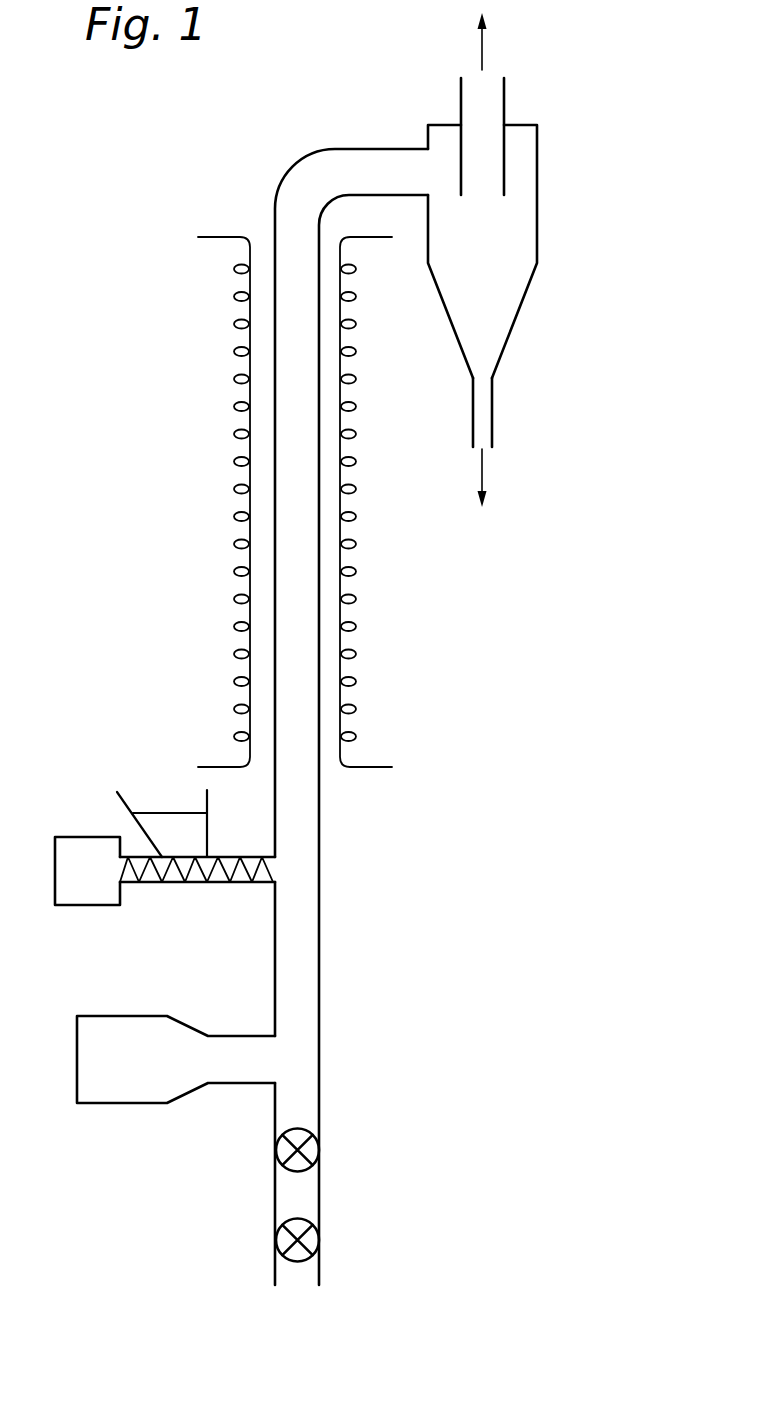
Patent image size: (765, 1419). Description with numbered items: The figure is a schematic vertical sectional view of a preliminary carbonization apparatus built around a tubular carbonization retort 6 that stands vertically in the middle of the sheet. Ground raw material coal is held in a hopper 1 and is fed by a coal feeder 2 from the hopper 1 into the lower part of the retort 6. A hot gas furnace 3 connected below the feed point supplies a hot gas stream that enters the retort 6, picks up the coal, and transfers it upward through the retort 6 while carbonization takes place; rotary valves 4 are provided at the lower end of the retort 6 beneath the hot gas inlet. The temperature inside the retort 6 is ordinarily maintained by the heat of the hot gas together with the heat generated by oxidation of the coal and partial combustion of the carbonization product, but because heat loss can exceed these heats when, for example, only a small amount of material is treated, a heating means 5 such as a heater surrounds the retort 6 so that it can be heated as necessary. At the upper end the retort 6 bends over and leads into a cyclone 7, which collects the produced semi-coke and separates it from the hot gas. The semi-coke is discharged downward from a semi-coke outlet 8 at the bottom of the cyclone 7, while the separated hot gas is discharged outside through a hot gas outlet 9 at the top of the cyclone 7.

The hopper 1 is at (162, 818).
The coal feeder 2 is at (165, 871).
The hot gas furnace 3 is at (176, 1059).
The rotary valves 4 is at (319, 1232).
The heating means 5 is at (238, 572).
The tubular carbonization retort 6 is at (320, 848).
The cyclone 7 is at (513, 236).
The semi-coke outlet 8 is at (481, 422).
The hot gas outlet 9 is at (492, 97).